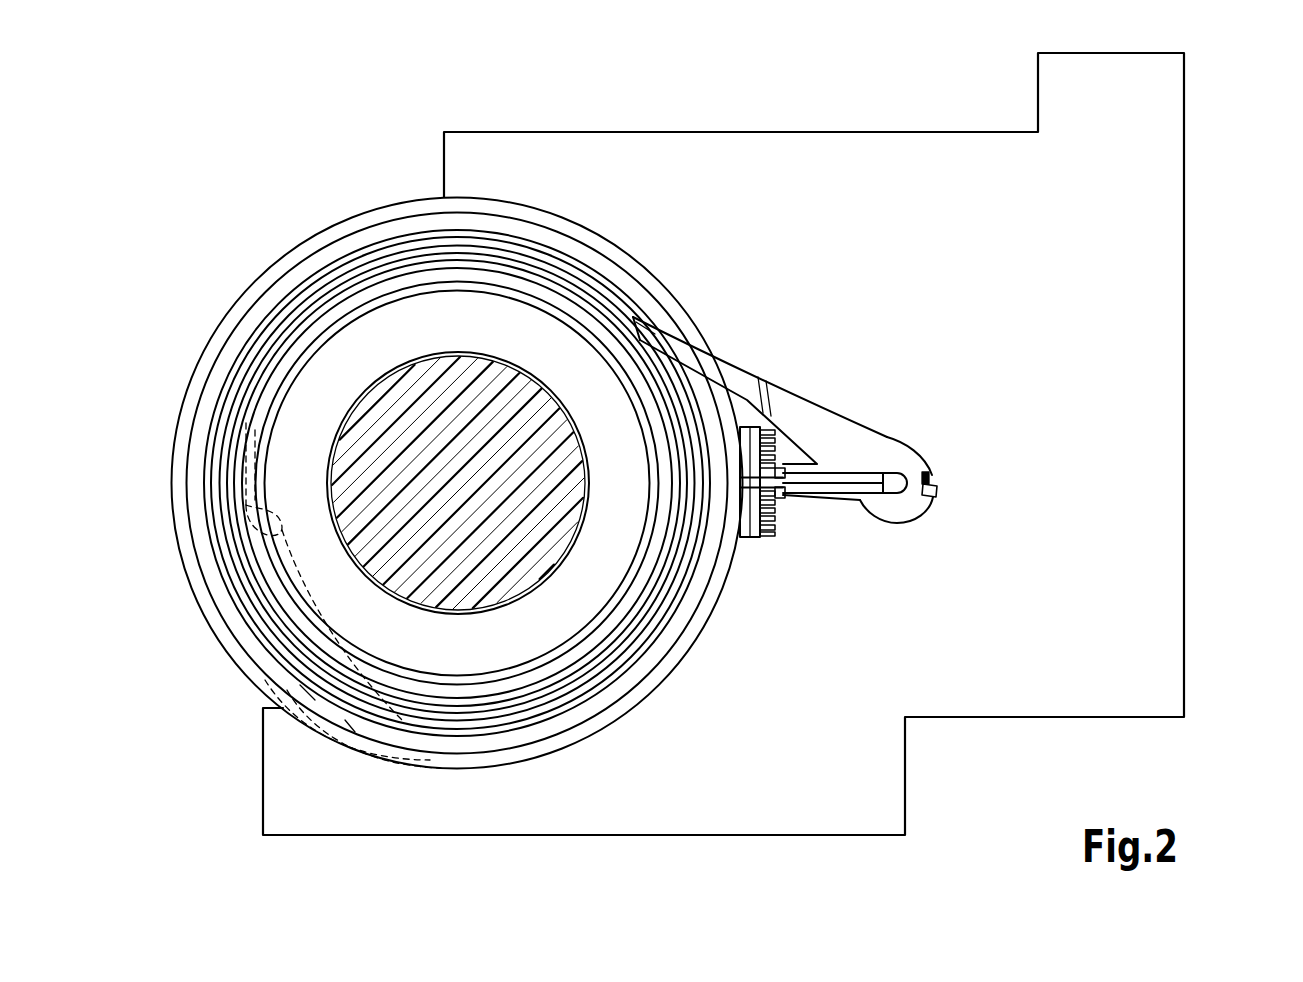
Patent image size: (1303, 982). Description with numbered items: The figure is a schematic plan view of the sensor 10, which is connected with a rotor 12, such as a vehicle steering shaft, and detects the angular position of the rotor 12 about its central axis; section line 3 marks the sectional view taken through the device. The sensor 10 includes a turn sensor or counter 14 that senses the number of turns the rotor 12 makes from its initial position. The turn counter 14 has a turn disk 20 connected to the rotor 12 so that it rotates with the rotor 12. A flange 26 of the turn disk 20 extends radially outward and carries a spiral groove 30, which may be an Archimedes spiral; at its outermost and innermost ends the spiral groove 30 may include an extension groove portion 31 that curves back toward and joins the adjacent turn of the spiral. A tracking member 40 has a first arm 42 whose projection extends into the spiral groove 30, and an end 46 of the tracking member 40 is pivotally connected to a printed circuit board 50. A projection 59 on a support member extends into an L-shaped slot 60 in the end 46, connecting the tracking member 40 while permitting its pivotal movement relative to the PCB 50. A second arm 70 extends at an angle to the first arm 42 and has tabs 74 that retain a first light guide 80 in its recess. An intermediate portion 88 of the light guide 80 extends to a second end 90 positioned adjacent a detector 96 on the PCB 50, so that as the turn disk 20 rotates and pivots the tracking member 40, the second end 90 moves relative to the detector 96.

The section line 3- 3 is at (105, 480).
The sensor 10 is at (814, 291).
The rotor 12 is at (393, 465).
The turn sensor or counter 14 is at (963, 400).
The turn disk 20 is at (362, 240).
The flange 26 is at (278, 308).
The spiral groove 30 is at (476, 229).
The extension groove portion 31 is at (263, 680).
The tracking member 40 is at (813, 399).
The first arm 42 is at (698, 362).
The end of the tracking member 46 is at (903, 514).
The printed circuit board 50 is at (1123, 572).
The radially outwardly extending projection 59 is at (935, 490).
The L-shaped slot 60 is at (935, 478).
The second arm 70 is at (821, 495).
The tabs 74 is at (781, 468).
The first light guide 80 is at (868, 484).
The intermediate portion 88 is at (852, 480).
The second end 90 is at (747, 543).
The detector 96 is at (770, 540).